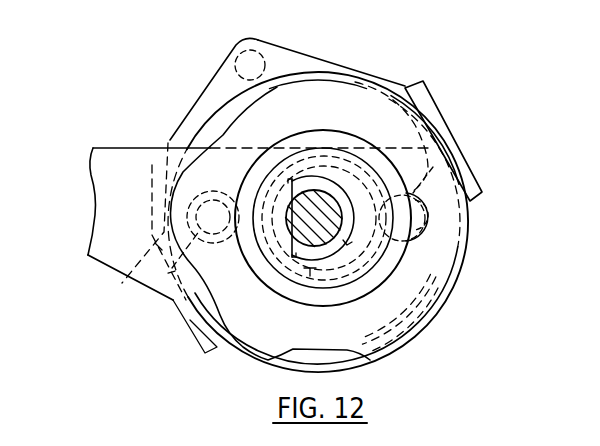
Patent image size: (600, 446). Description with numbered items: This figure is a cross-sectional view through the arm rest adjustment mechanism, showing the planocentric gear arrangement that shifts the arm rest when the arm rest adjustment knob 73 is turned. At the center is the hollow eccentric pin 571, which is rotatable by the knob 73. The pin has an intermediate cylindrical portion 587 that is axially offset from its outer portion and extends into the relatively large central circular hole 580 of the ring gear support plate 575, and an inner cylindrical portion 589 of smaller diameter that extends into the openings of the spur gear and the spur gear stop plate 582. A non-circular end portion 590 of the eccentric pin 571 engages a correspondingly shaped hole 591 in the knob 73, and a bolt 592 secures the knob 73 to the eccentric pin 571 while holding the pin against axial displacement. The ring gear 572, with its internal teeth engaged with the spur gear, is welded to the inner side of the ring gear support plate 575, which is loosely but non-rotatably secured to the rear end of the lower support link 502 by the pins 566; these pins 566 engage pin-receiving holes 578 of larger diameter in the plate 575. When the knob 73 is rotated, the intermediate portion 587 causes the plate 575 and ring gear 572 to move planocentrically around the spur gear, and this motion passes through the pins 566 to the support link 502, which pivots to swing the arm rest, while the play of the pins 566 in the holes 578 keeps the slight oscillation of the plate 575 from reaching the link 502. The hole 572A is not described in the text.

The arm rest adjustment knob 73 is at (409, 346).
The lower support link 502 is at (146, 148).
The ring gear 572 is at (222, 60).
The arm hole 572A is at (266, 58).
The ring gear support plate 575 is at (328, 66).
The spur gear stop plate 582 is at (480, 174).
The pins 566 is at (455, 258).
The pin-receiving holes 578 is at (433, 167).
The eccentric pin 571 is at (344, 187).
The non-circular end portion 590 is at (292, 192).
The hole 591 is at (291, 250).
The bolt 592 is at (345, 242).
The intermediate cylindrical portion 587 is at (294, 165).
The circular hole 580 is at (322, 171).
The inner cylindrical portion 589 is at (309, 276).